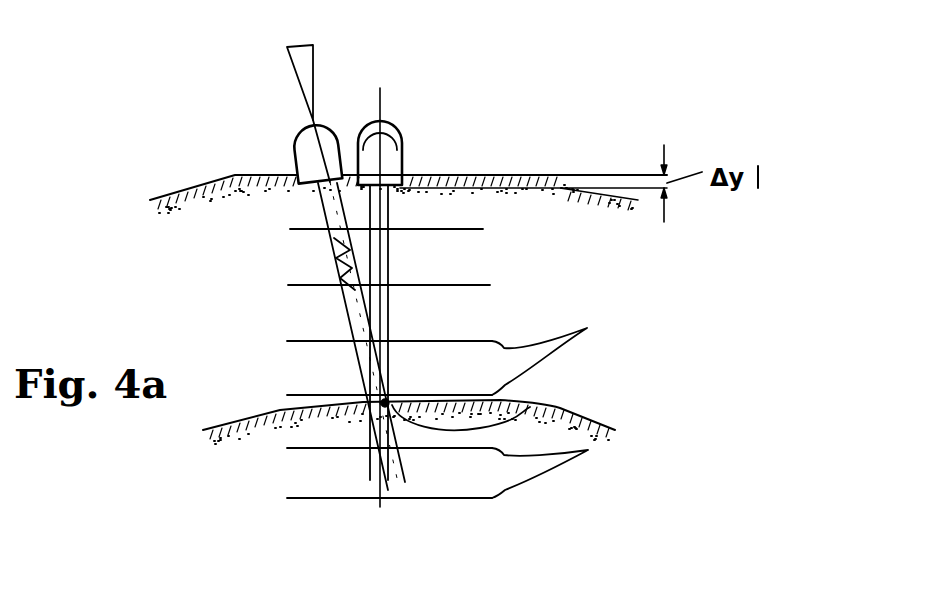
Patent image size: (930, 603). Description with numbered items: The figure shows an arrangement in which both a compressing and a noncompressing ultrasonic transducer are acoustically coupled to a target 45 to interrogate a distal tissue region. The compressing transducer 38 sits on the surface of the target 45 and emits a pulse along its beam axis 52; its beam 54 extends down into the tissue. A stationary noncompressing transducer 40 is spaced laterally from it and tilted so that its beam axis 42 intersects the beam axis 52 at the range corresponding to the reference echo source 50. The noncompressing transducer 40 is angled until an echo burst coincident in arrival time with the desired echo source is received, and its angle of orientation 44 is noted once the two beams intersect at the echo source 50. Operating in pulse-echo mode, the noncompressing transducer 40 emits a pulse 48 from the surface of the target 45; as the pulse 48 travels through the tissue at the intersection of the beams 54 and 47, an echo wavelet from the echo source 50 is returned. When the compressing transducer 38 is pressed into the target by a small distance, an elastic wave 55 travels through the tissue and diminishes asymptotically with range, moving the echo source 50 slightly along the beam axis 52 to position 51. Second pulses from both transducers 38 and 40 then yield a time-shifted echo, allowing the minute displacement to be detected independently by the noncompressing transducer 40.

The compressing transducer 38 is at (402, 134).
The stationary noncompressing transducer 40 is at (294, 146).
The beam axis 42 is at (295, 82).
The angle of orientation 44 is at (337, 22).
The target 45 is at (560, 230).
The beam 47 is at (343, 290).
The pulse 48 is at (332, 253).
The echo source 50 is at (393, 395).
The displaced echo source position 51 is at (530, 408).
The beam axis 52 is at (383, 91).
The beam 54 is at (388, 313).
The elastic wave 55 is at (457, 363).